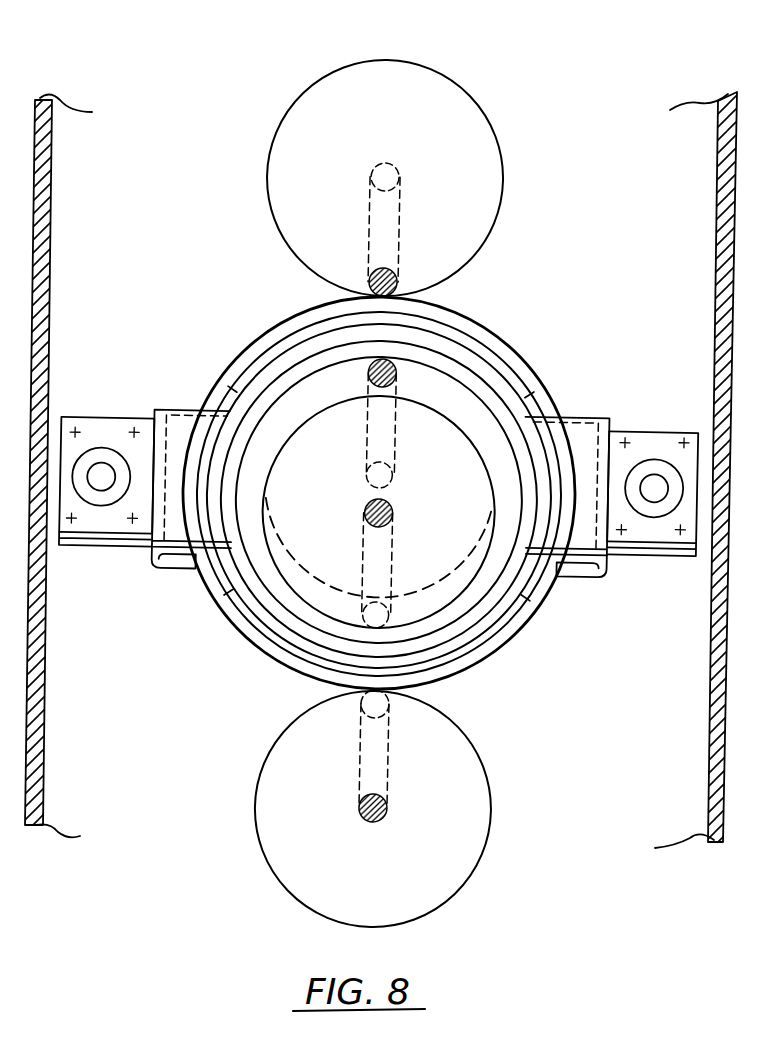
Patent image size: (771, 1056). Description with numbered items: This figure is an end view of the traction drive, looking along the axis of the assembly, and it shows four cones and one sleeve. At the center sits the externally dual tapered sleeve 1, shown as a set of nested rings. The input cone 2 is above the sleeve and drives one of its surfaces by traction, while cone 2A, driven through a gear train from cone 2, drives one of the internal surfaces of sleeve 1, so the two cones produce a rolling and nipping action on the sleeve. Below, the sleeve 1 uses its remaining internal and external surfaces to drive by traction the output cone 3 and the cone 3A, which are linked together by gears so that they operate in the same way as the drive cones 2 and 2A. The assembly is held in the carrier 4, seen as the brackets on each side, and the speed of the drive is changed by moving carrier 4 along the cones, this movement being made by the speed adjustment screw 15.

The sleeve 1 is at (523, 628).
The cone 2 is at (450, 103).
The cone 2A is at (442, 390).
The cone 3 is at (292, 755).
The cone 3A is at (440, 593).
The carrier 4 is at (117, 418).
The speed adjustment screw 15 is at (101, 488).